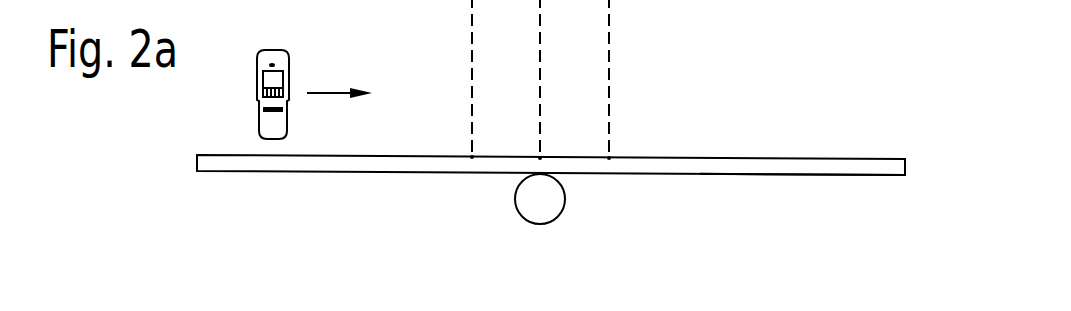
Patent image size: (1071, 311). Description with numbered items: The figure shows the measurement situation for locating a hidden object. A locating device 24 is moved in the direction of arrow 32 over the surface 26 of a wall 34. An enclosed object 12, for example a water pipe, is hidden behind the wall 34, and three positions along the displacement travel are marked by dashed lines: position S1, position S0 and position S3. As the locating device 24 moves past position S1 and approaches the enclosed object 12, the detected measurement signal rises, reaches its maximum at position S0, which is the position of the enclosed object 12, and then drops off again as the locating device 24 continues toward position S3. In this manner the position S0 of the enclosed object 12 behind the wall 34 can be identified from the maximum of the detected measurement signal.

The enclosed object 12 is at (532, 204).
The locating device 24 is at (263, 65).
The surface 26 is at (818, 160).
The arrow 32 is at (330, 93).
The wall 34 is at (838, 166).
The position S1 is at (472, 158).
The position S0 is at (540, 158).
The position S3 is at (609, 158).